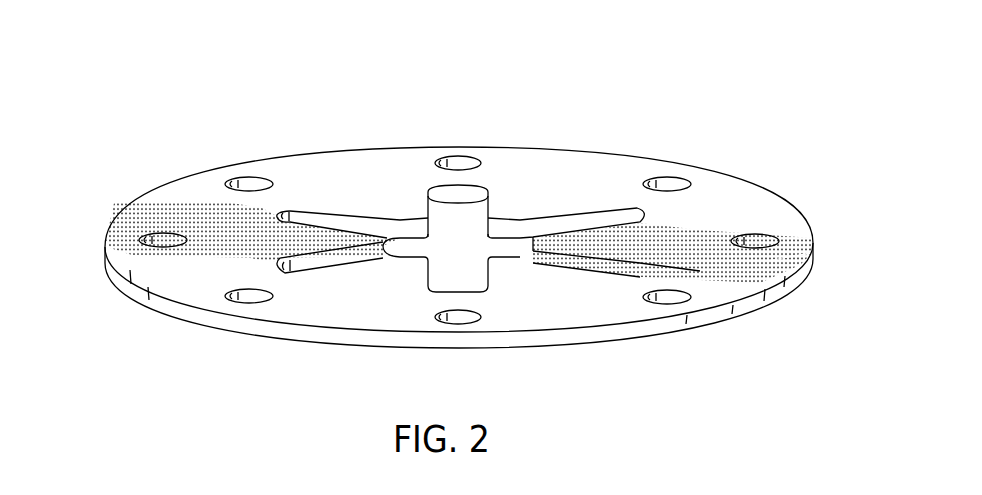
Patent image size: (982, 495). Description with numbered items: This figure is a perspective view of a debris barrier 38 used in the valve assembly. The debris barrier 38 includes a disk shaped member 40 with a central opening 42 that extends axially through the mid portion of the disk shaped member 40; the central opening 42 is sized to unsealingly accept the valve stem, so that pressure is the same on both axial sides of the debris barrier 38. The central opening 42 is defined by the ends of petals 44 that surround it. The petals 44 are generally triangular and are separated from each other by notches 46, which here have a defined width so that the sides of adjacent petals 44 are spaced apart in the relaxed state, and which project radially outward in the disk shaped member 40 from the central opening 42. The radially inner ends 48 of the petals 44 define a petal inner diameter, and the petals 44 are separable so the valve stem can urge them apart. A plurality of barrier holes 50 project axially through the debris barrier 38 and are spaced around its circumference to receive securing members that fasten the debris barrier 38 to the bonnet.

The debris barrier 38 is at (716, 129).
The disk shaped member 40 is at (173, 200).
The central opening 42 is at (458, 237).
The petals 44 is at (396, 208).
The notches 46 is at (574, 227).
The radially inner ends 48 is at (382, 228).
The barrier holes 50 is at (758, 236).